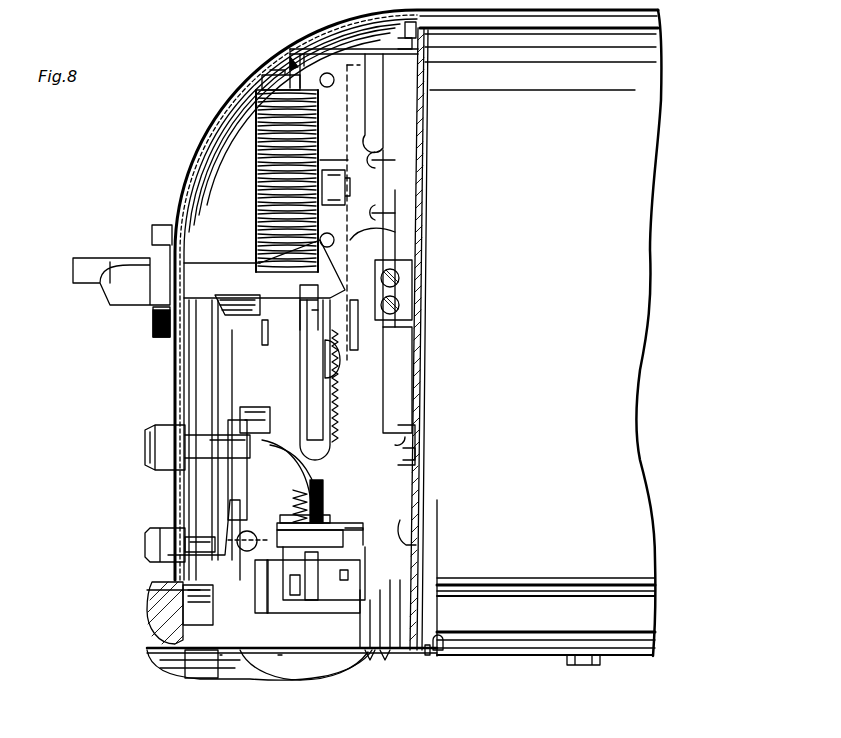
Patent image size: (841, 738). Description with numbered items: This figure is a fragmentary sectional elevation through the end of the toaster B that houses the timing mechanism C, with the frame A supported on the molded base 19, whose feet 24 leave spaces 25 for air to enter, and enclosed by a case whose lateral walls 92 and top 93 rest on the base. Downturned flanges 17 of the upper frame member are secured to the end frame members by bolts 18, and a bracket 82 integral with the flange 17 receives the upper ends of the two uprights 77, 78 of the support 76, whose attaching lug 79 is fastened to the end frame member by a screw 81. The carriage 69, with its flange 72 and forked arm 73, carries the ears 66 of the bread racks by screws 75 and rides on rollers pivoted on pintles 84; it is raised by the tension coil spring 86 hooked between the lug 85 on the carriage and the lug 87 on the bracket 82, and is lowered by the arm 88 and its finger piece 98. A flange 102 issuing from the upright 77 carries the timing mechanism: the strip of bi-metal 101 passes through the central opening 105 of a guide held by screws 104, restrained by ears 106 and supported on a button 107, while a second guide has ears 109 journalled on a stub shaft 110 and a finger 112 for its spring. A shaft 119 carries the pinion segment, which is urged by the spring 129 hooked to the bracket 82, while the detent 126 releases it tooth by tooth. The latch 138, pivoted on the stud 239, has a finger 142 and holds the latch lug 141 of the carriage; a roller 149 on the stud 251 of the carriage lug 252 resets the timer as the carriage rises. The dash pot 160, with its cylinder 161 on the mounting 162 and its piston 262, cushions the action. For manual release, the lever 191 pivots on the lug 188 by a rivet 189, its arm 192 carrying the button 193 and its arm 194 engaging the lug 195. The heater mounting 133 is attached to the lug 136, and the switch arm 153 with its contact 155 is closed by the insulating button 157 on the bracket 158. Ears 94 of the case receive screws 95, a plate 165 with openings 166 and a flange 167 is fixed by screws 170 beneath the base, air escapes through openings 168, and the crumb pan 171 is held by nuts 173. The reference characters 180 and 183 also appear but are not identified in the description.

The bracket 82 is at (334, 42).
The lug 87 is at (288, 58).
The support 76 is at (262, 78).
The tension coil spring 86 is at (258, 158).
The finger piece 98 is at (108, 256).
The arm 88 is at (200, 264).
The lug 85 is at (280, 292).
The bracket 158 is at (152, 330).
The insulating button 157 is at (218, 312).
The mounting 162 is at (260, 350).
The upright 77 is at (260, 370).
The stud 239 is at (262, 330).
The arm 192 is at (226, 430).
The button 193 is at (144, 440).
The shaft 119 is at (217, 446).
The flange 102 is at (250, 495).
The leaf spring switch arm 153 is at (240, 492).
The lug 188 is at (220, 500).
The rivet 189 is at (236, 540).
The knob 183 is at (144, 540).
The shaft 180 is at (184, 548).
The contact 155 is at (195, 560).
The ears 94 is at (150, 592).
The base 19 is at (190, 600).
The insulated mounting 133 is at (215, 598).
The screws 95 is at (250, 582).
The lug 136 is at (250, 600).
The feet 24 is at (190, 667).
The screws 104 is at (215, 655).
The openings 166 is at (222, 652).
The plate 165 is at (280, 655).
The screws 170 is at (372, 662).
The central opening 105 is at (335, 614).
The button 107 is at (310, 600).
The detent 126 is at (295, 580).
The finger 142 is at (305, 402).
The tension coil spring 129 is at (340, 446).
The lever 191 is at (250, 490).
The arm 194 is at (322, 500).
The finger 112 is at (335, 497).
The lug 195 is at (325, 524).
The stub shaft 110 is at (360, 529).
The ears 109 is at (355, 542).
The strip of bi-metal 101 is at (318, 582).
The ears 106 is at (350, 577).
The flange 167 is at (418, 538).
The frame A is at (418, 570).
The timing mechanism C is at (395, 515).
The attaching lug 79 is at (412, 442).
The screw 81 is at (408, 460).
The upright 78 is at (370, 385).
The dash pot 160 is at (340, 380).
The piston 262 is at (335, 362).
The ears 66 is at (405, 320).
The cylinder 161 is at (345, 332).
The latch 138 is at (318, 313).
The screws 75 is at (400, 307).
The pintles 84 is at (335, 80).
The roller 149 is at (398, 234).
The forked arm 73 is at (398, 215).
The stud 251 is at (350, 187).
The lug 252 is at (350, 170).
The flange 72 is at (398, 162).
The carriage 69 is at (355, 125).
The openings 168 is at (428, 120).
The latch lug 141 is at (320, 127).
The bolts 18 is at (408, 50).
The downturned flanges 17 is at (418, 40).
The top 93 is at (575, 6).
The toaster B is at (662, 20).
The lateral walls 92 is at (585, 270).
The spaces 25 is at (512, 662).
The crumb pan 171 is at (430, 660).
The nuts 173 is at (592, 668).